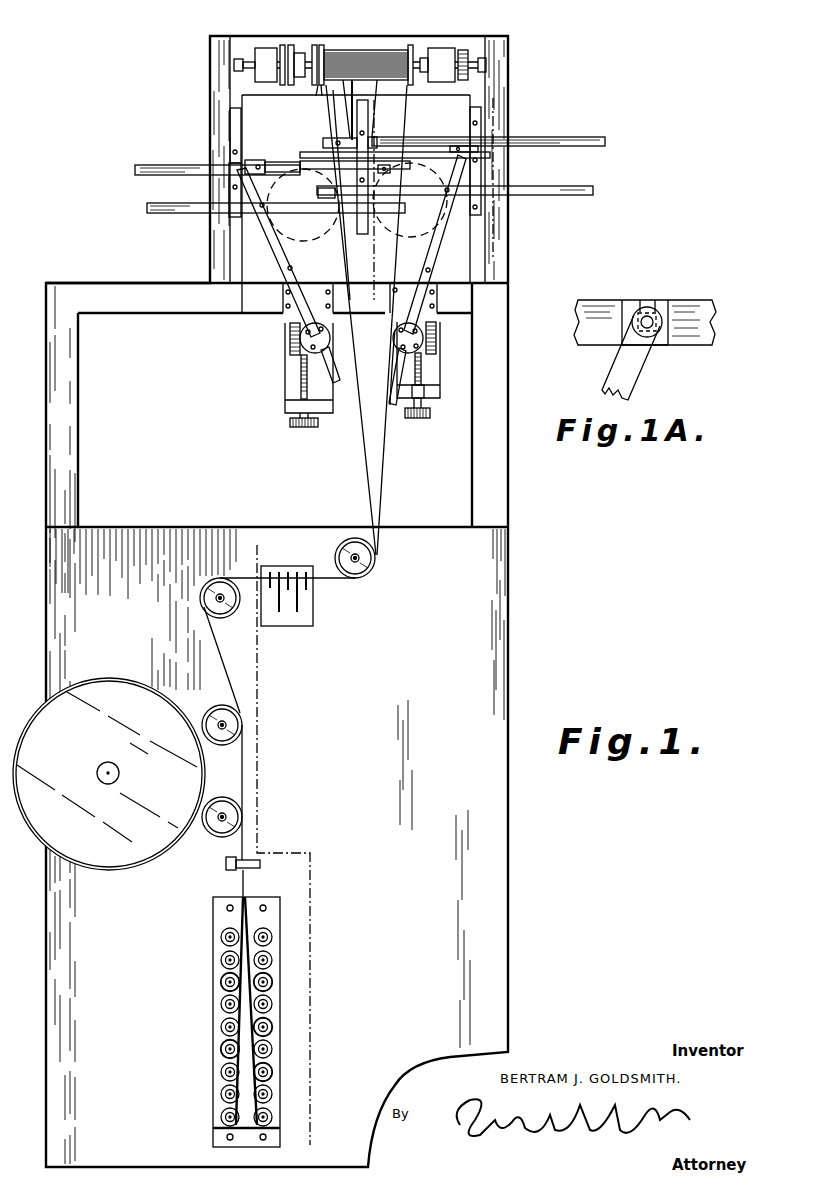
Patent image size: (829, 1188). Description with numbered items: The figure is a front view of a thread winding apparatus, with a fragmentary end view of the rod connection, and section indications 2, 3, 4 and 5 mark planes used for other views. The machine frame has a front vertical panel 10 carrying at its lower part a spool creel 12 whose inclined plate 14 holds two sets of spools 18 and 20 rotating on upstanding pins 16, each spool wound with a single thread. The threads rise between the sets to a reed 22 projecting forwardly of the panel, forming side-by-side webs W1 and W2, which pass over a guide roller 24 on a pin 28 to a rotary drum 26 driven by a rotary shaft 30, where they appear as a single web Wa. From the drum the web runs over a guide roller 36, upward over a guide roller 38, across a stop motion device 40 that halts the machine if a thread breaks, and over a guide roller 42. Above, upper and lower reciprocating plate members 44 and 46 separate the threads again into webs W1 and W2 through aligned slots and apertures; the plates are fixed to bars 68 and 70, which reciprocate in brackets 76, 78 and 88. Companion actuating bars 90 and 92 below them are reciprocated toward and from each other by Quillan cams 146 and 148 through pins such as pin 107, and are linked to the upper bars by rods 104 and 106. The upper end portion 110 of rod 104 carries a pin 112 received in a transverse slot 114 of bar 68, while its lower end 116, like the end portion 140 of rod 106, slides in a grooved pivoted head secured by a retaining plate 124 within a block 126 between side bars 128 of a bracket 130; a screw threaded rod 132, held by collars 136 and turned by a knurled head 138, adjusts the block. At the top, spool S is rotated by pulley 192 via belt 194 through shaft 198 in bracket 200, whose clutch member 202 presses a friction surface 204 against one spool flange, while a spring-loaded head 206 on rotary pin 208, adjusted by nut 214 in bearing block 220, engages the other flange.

In FIG. 1, the front vertical panel 10 is at (365, 342).
In FIG. 1, the spool creel 12 is at (283, 914).
In FIG. 1, the inclined plate 14 is at (274, 960).
In FIG. 1, the pins 16 is at (226, 962).
In FIG. 1, the spools 18 is at (268, 1049).
In FIG. 1, the spools 20 is at (226, 1027).
In FIG. 1, the reed 22 is at (263, 862).
In FIG. 1, the guide roller 24 is at (226, 801).
In FIG. 1, the rotary drum 26 is at (115, 860).
In FIG. 1, the pin 28 is at (224, 596).
In FIG. 1, the rotary shaft 30 is at (120, 774).
In FIG. 1, the guide roller 36 is at (242, 735).
In FIG. 1, the guide roller 38 is at (222, 618).
In FIG. 1, the stop motion device 40 is at (312, 629).
In FIG. 1, the guide roller 42 is at (362, 568).
In FIG. 1, the upper reciprocating plate member 44 is at (493, 151).
In FIG. 1, the lower reciprocating plate member 46 is at (240, 163).
In FIG. 1, the bar 68 is at (595, 136).
In FIG. 1A, the bar 68 is at (690, 312).
In FIG. 1, the bar 70 is at (143, 164).
In FIG. 1, the bracket 76 is at (356, 124).
In FIG. 1, the bracket 78 is at (470, 114).
In FIG. 1, the bracket 88 is at (228, 124).
In FIG. 1, the actuating bar 90 is at (584, 196).
In FIG. 1, the actuating bar 92 is at (155, 214).
In FIG. 1, the rod 104 is at (420, 261).
In FIG. 1A, the rod 104 is at (626, 395).
In FIG. 1, the rod 106 is at (282, 262).
In FIG. 1, the pin 107 is at (447, 198).
In FIG. 1A, the upper end portion 110 is at (632, 315).
In FIG. 1A, the pin 112 is at (664, 347).
In FIG. 1A, the transverse slot 114 is at (650, 307).
In FIG. 1, the lower end 116 is at (396, 408).
In FIG. 1, the retaining plate 124 is at (297, 355).
In FIG. 1, the block 126 is at (291, 340).
In FIG. 1, the side bars 128 is at (404, 362).
In FIG. 1, the bracket 130 is at (284, 389).
In FIG. 1, the screw threaded rod 132 is at (422, 370).
In FIG. 1, the collars 136 is at (428, 400).
In FIG. 1, the knurled head 138 is at (426, 419).
In FIG. 1, the end portion 140 is at (336, 384).
In FIG. 1, the Quillan cam 146 is at (420, 222).
In FIG. 1, the Quillan cam 148 is at (304, 246).
In FIG. 1, the pulley 192 is at (292, 47).
In FIG. 1, the belt 194 is at (284, 46).
In FIG. 1, the shaft 198 is at (306, 97).
In FIG. 1, the bracket 200 is at (264, 56).
In FIG. 1, the clutch member 202 is at (320, 47).
In FIG. 1, the friction surface 204 is at (319, 86).
In FIG. 1, the head 206 is at (411, 60).
In FIG. 1, the rotary pin 208 is at (487, 60).
In FIG. 1, the adjustable nut 214 is at (464, 50).
In FIG. 1, the bearing block 220 is at (440, 56).
In FIG. 1, the spool S is at (375, 52).
In FIG. 1, the thread web W1 is at (240, 893).
In FIG. 1, the thread web W2 is at (387, 467).
In FIG. 1, the thread web Wa is at (328, 582).
In FIG. 1, the section line 2 is at (212, 97).
In FIG. 1, the section line 3 is at (259, 550).
In FIG. 1, the section line 4 is at (376, 107).
In FIG. 1, the section line 5 is at (495, 108).